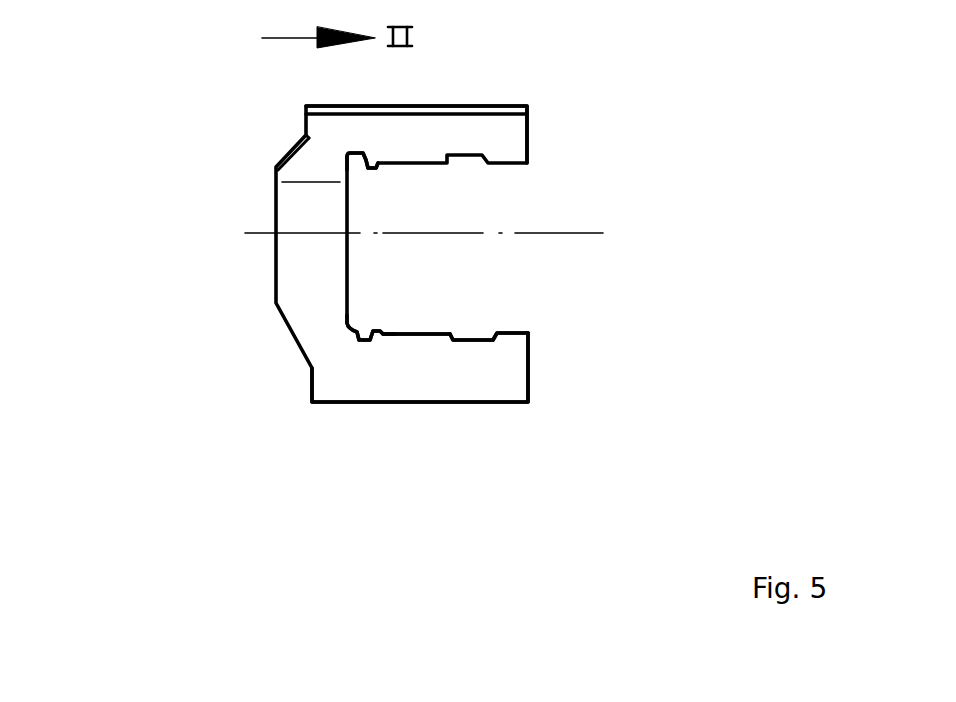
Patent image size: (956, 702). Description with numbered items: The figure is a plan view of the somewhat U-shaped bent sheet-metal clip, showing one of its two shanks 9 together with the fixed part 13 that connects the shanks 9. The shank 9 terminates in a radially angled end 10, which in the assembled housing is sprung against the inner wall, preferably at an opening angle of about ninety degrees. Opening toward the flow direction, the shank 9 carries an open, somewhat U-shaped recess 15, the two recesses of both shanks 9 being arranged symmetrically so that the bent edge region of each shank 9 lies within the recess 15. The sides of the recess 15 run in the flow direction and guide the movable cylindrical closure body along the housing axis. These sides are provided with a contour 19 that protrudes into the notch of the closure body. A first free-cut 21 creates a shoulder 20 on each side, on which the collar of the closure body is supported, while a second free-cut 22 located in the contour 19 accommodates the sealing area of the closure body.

The shank 9 is at (302, 223).
The angular end 10 is at (333, 133).
The fixed part 13 is at (326, 403).
The recess 15 is at (487, 217).
The contour 19 is at (417, 333).
The shoulder 20 is at (347, 163).
The first free-cut 21 is at (362, 332).
The second free-cut 22 is at (477, 332).